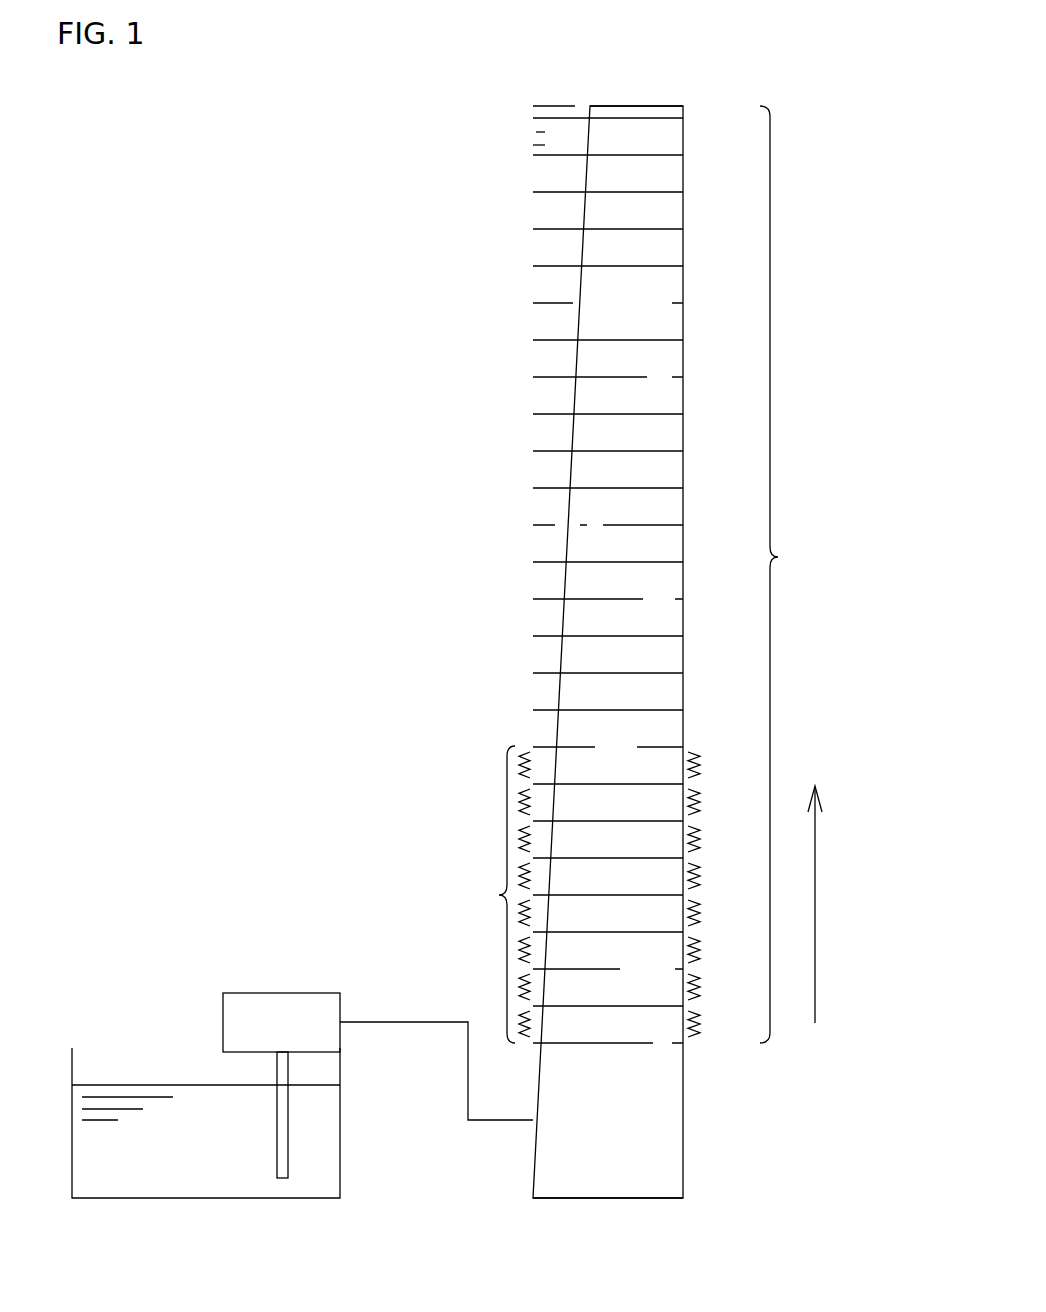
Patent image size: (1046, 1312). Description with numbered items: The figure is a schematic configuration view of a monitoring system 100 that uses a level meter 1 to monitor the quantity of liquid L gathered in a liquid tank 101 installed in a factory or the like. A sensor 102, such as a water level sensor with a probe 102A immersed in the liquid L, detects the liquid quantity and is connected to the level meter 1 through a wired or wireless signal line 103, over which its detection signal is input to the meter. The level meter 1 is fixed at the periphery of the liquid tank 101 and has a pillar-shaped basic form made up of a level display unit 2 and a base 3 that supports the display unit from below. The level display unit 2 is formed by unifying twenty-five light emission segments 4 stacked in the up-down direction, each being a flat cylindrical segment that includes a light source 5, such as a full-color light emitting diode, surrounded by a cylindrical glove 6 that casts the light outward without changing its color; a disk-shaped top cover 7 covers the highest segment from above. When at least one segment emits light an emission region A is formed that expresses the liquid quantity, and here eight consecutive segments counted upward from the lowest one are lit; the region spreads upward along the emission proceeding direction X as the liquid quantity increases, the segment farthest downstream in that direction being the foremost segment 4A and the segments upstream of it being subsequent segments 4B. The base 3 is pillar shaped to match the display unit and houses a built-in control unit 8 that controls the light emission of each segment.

The level meter 1 is at (583, 104).
The level display unit 2 is at (781, 574).
The base 3 is at (662, 1105).
The light emission segment 4 is at (677, 138).
The foremost segment 4A is at (643, 757).
The subsequent segment 4B is at (603, 802).
The light source 5 is at (532, 132).
The glove 6 is at (532, 145).
The top cover 7 is at (637, 107).
The control unit 8 is at (660, 1159).
The monitoring system 100 is at (275, 697).
The liquid tank 101 is at (340, 1168).
The sensor 102 is at (295, 997).
The probe 102A is at (288, 1122).
The signal line 103 is at (405, 1027).
The liquid L is at (160, 1085).
The emission region A is at (492, 894).
The emission proceeding direction X is at (815, 903).